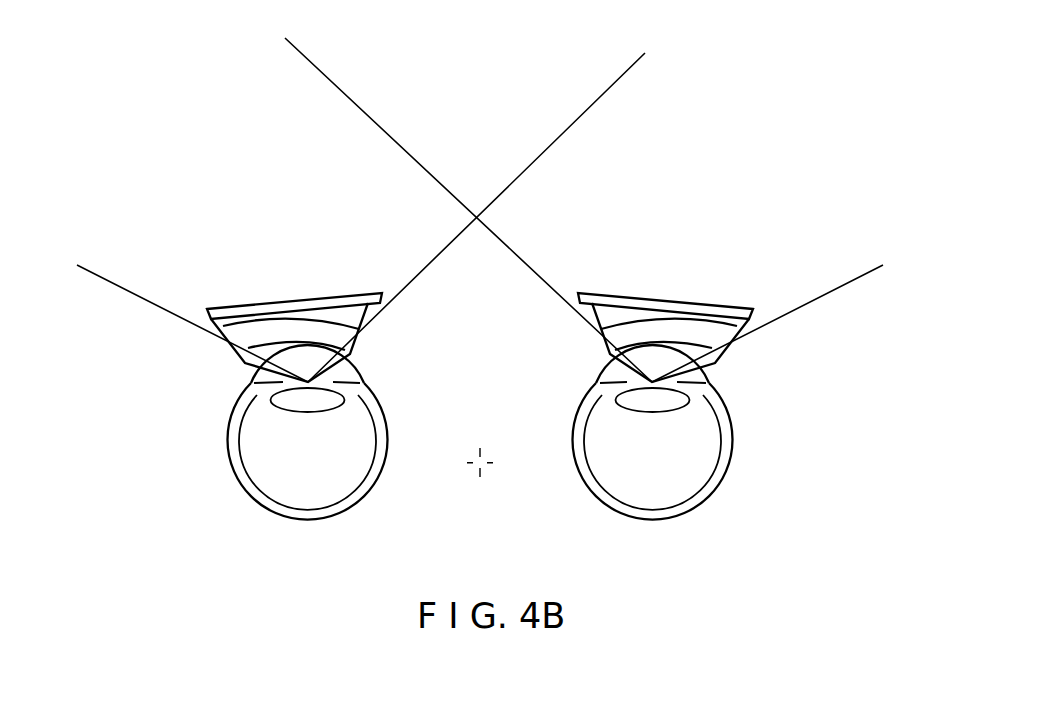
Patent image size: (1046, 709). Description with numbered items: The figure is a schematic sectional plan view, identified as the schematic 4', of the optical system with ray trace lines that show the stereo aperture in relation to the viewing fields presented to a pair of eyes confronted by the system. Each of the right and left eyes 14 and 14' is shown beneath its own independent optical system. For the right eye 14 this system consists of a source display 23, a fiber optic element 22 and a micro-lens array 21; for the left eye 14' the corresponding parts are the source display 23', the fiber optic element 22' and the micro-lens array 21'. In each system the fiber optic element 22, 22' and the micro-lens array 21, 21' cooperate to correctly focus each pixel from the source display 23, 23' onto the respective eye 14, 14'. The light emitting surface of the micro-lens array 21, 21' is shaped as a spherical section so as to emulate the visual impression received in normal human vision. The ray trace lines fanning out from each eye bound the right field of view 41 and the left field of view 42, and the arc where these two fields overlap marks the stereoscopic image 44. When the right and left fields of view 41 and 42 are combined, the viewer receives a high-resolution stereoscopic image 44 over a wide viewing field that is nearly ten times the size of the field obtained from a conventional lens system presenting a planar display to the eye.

The eye 14 is at (699, 432).
The eye 14' is at (261, 432).
The micro-lens array 21 is at (721, 382).
The micro-lens array 21' is at (234, 383).
The fiber optic element 22 is at (718, 342).
The fiber optic element 22' is at (238, 342).
The source display 23 is at (689, 276).
The source display 23' is at (278, 275).
The right field of view 41 is at (368, 112).
The left field of view 42 is at (612, 80).
The stereoscopic image 44 is at (645, 57).
The schematic 4' is at (828, 532).